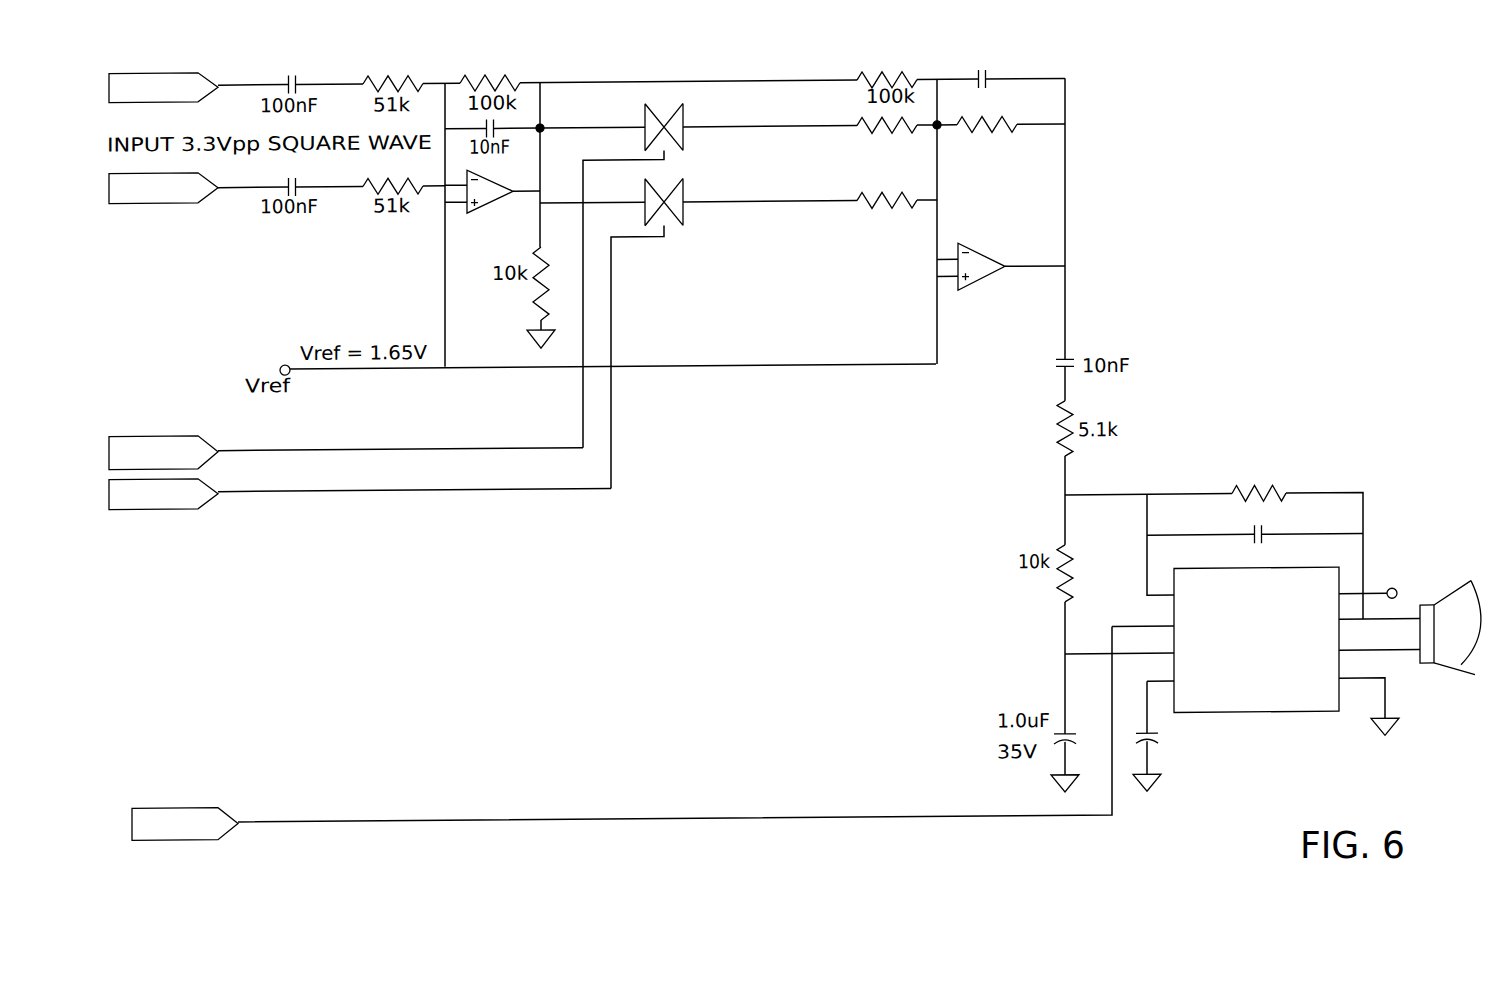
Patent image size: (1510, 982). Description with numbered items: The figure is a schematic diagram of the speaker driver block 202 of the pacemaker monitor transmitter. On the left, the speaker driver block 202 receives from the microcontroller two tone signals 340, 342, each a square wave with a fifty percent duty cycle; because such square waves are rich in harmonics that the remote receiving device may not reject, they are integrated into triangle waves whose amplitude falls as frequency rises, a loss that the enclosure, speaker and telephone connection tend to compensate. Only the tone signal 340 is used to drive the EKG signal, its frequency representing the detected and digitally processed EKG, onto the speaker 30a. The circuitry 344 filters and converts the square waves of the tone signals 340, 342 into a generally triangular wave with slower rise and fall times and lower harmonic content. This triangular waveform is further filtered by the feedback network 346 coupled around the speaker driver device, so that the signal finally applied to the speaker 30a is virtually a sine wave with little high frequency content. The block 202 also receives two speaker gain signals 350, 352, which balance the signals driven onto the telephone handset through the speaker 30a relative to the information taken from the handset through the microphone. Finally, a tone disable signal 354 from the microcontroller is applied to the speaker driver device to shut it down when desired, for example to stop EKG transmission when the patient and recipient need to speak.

The tone signal 340 is at (242, 88).
The tone signal 342 is at (240, 190).
The speaker gain signal 350 is at (322, 449).
The speaker gain signal 352 is at (330, 493).
The tone disable signal 354 is at (338, 821).
The circuitry 344 is at (757, 433).
The feedback network 346 is at (1315, 464).
The speaker driver block 202 is at (1138, 250).
The speaker 30a is at (1471, 590).